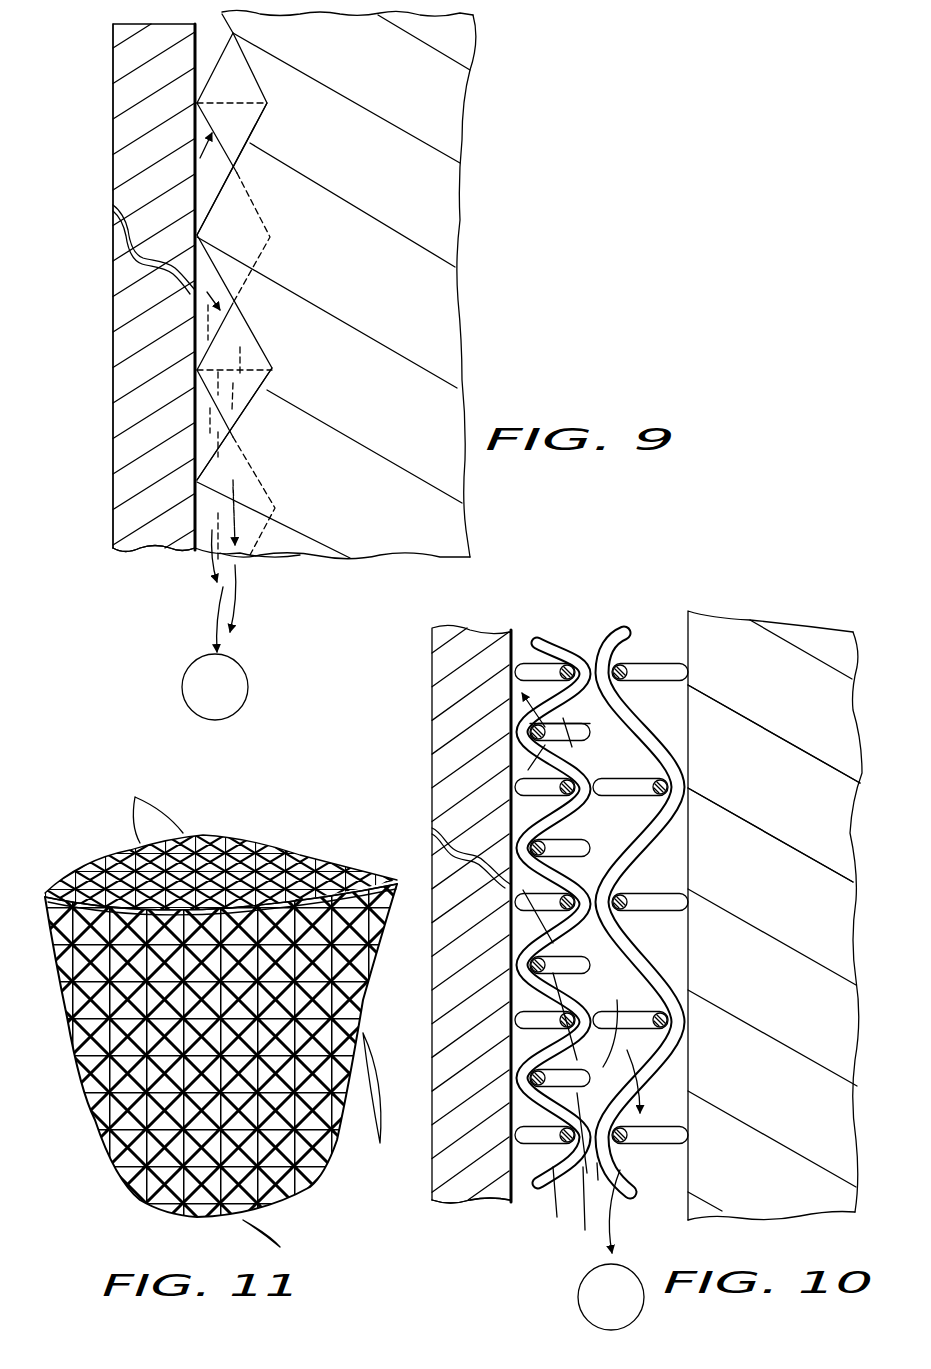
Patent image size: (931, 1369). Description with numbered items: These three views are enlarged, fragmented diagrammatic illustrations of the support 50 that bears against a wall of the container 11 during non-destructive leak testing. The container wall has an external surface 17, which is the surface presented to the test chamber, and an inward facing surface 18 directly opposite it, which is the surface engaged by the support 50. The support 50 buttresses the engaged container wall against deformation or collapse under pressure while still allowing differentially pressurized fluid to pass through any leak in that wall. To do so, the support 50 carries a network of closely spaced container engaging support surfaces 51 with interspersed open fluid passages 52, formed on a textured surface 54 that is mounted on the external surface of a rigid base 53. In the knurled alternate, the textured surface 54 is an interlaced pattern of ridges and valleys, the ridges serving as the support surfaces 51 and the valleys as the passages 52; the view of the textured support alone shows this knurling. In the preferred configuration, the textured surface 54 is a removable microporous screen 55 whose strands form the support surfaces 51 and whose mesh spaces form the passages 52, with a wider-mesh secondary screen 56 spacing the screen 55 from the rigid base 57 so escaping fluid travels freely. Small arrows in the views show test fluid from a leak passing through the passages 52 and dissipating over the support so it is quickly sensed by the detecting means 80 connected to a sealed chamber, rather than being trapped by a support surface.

In FIG. 9, the container 11 is at (158, 548).
In FIG. 10, the container 11 is at (470, 1203).
In FIG. 9, the external surface 17 is at (112, 503).
In FIG. 9, the inward facing surface 18 is at (202, 183).
In FIG. 10, the inward facing surface 18 is at (520, 640).
In FIG. 9, the support 50 is at (465, 173).
In FIG. 10, the support 50 is at (634, 597).
In FIG. 11, the support 50 is at (373, 860).
In FIG. 9, the support surfaces 51 is at (202, 99).
In FIG. 10, the support surfaces 51 is at (508, 793).
In FIG. 11, the support surfaces 51 is at (367, 1172).
In FIG. 9, the fluid passages 52 is at (213, 163).
In FIG. 10, the fluid passages 52 is at (530, 772).
In FIG. 11, the fluid passages 52 is at (307, 1200).
In FIG. 9, the rigid base 53 is at (407, 292).
In FIG. 10, the rigid base 53 is at (736, 626).
In FIG. 9, the textured surface 54 is at (197, 153).
In FIG. 10, the textured surface 54 is at (508, 797).
In FIG. 11, the textured surface 54 is at (320, 862).
In FIG. 10, the screen 55 is at (555, 647).
In FIG. 10, the secondary screen 56 is at (651, 670).
In FIG. 10, the rigid base 57 is at (789, 687).
In FIG. 9, the detecting means 80 is at (233, 657).
In FIG. 10, the detecting means 80 is at (581, 1283).